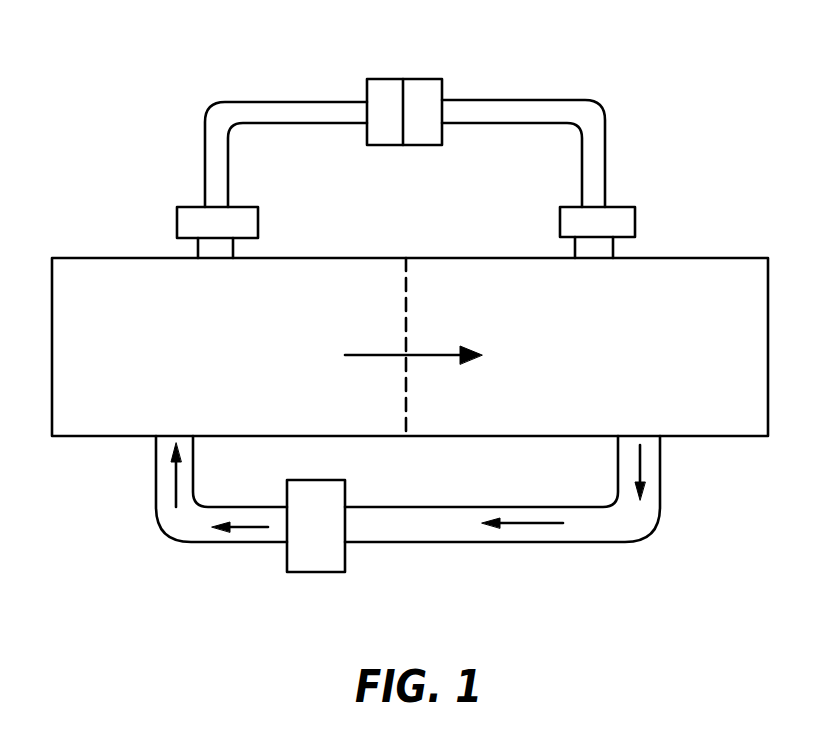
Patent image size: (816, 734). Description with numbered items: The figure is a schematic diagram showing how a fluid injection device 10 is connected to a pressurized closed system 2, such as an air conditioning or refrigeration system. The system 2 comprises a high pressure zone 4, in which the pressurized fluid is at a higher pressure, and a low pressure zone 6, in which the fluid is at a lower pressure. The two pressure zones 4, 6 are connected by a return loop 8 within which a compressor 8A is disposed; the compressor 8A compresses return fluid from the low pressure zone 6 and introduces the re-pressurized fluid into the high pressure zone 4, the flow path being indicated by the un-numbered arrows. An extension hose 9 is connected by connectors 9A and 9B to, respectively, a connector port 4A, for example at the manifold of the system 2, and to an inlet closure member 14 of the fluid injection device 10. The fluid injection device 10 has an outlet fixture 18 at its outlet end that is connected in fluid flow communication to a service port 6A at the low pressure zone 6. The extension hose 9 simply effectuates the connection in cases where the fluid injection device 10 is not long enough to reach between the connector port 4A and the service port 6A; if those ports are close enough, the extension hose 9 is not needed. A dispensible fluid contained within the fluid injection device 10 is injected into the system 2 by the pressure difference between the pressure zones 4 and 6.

The pressurized closed system 2 is at (113, 532).
The high pressure zone 4 is at (223, 377).
The low pressure zone 6 is at (605, 378).
The connector port 4A is at (233, 247).
The service port 6A is at (613, 250).
The return loop 8 is at (545, 544).
The compressor 8A is at (320, 574).
The extension hose 9 is at (285, 100).
The connector 9A is at (177, 224).
The connector 9B is at (382, 78).
The fluid injection device 10 is at (522, 100).
The inlet closure member 14 is at (445, 87).
The outlet fixture 18 is at (622, 206).